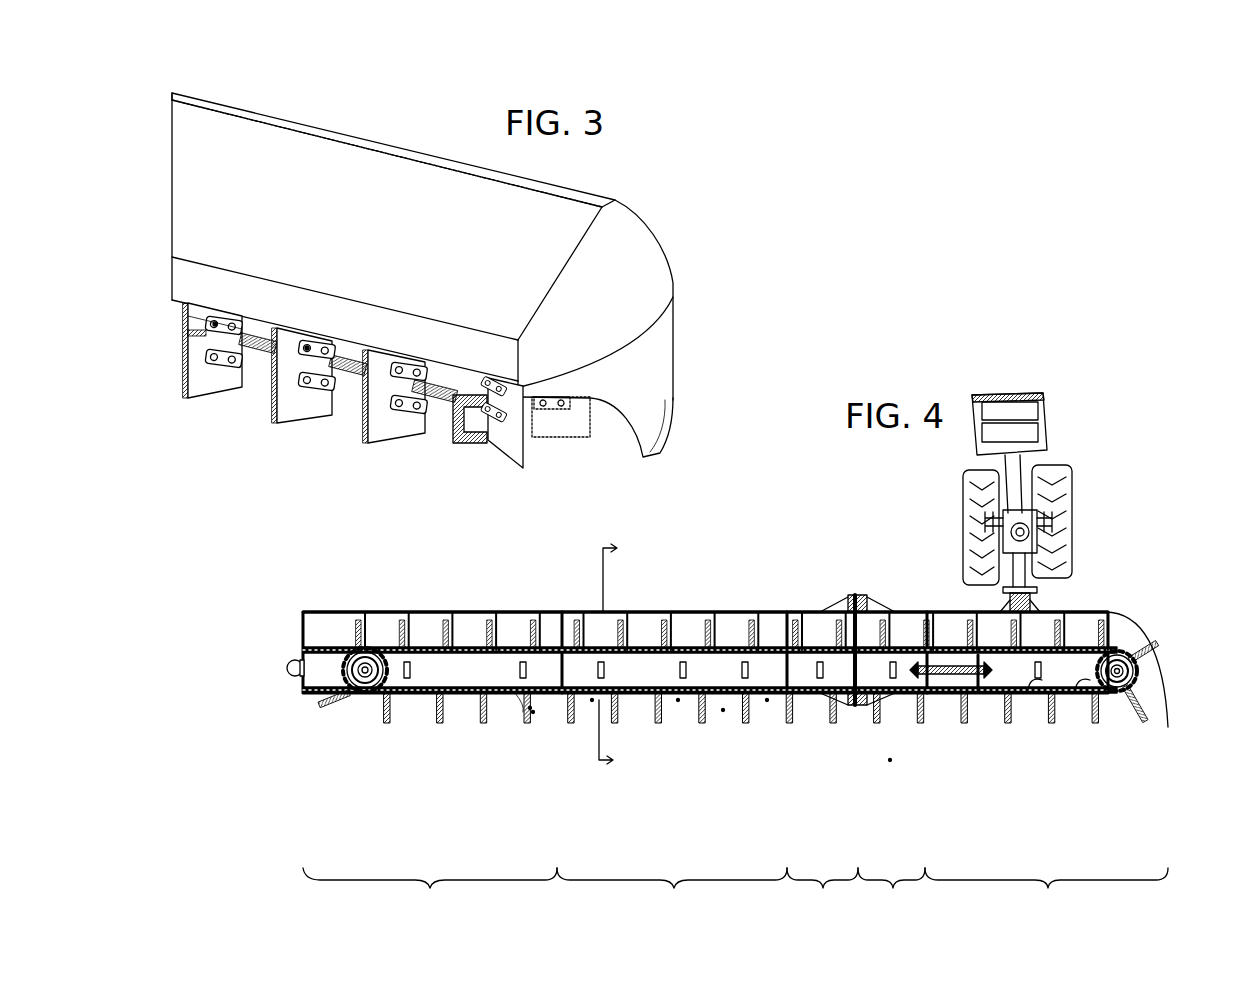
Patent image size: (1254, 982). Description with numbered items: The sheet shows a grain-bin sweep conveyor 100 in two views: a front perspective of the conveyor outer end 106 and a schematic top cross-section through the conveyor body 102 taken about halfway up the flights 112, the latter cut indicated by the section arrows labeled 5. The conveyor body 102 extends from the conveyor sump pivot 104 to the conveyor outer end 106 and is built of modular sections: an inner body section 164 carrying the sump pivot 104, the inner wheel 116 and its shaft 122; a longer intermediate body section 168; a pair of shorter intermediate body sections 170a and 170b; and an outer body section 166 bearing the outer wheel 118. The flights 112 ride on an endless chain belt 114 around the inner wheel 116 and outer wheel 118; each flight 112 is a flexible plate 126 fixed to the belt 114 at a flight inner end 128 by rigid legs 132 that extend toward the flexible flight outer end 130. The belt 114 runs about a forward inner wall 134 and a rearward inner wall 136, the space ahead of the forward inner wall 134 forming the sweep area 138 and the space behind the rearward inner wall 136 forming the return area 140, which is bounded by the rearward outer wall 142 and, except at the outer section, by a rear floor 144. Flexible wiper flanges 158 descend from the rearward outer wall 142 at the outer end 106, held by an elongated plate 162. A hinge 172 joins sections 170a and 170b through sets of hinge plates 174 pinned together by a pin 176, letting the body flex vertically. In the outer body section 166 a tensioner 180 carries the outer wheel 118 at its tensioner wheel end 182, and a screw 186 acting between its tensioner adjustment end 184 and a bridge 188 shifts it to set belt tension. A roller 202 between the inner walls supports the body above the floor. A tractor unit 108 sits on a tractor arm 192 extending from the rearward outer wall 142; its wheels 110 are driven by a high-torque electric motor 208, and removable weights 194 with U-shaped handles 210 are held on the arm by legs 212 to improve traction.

In FIG. 4, the sweep conveyor 100 is at (895, 769).
In FIG. 4, the conveyor body 102 is at (767, 700).
In FIG. 4, the conveyor sump pivot 104 is at (275, 690).
In FIG. 3, the conveyor outer end 106 is at (313, 128).
In FIG. 4, the conveyor outer end 106 is at (1170, 660).
In FIG. 4, the tractor unit 108 is at (958, 515).
In FIG. 4, the wheels 110 is at (1068, 475).
In FIG. 3, the flights 112 is at (402, 430).
In FIG. 4, the flights 112 is at (687, 700).
In FIG. 3, the endless belt 114 is at (260, 345).
In FIG. 4, the endless belt 114 is at (592, 700).
In FIG. 4, the inner wheel 116 is at (357, 698).
In FIG. 3, the outer wheel 118 is at (463, 443).
In FIG. 4, the outer wheel 118 is at (1160, 705).
In FIG. 4, the shaft 122 is at (367, 698).
In FIG. 3, the plate 126 is at (380, 397).
In FIG. 4, the plate 126 is at (523, 710).
In FIG. 3, the flight inner end 128 is at (437, 423).
In FIG. 3, the flight outer end 130 is at (367, 433).
In FIG. 4, the flight outer end 130 is at (530, 710).
In FIG. 3, the rigid legs 132 is at (392, 375).
In FIG. 4, the rigid legs 132 is at (532, 710).
In FIG. 3, the forward inner wall 134 is at (267, 377).
In FIG. 4, the forward inner wall 134 is at (678, 700).
In FIG. 4, the rearward inner wall 136 is at (690, 650).
In FIG. 3, the sweep area 138 is at (230, 393).
In FIG. 4, the sweep area 138 is at (723, 710).
In FIG. 4, the return area 140 is at (655, 625).
In FIG. 4, the rearward outer wall 142 is at (738, 625).
In FIG. 4, the rear floor 144 is at (775, 625).
In FIG. 3, the flanges 158 is at (663, 453).
In FIG. 3, the elongated plate 162 is at (673, 365).
In FIG. 4, the inner body section 164 is at (430, 892).
In FIG. 3, the outer body section 166 is at (352, 152).
In FIG. 4, the outer body section 166 is at (1046, 892).
In FIG. 4, the longer intermediate body section 168 is at (672, 892).
In FIG. 4, the shorter intermediate body section 170a is at (822, 892).
In FIG. 4, the shorter intermediate body section 170b is at (891, 892).
In FIG. 4, the hinge 172 is at (852, 598).
In FIG. 4, the hinge plates 174 is at (862, 600).
In FIG. 4, the pin 176 is at (860, 598).
In FIG. 4, the tensioner 180 is at (1040, 705).
In FIG. 4, the tensioner wheel end 182 is at (1085, 705).
In FIG. 4, the tensioner adjustment end 184 is at (1000, 702).
In FIG. 4, the screw 186 is at (950, 700).
In FIG. 4, the bridge 188 is at (935, 693).
In FIG. 4, the tractor arm 192 is at (1030, 578).
In FIG. 4, the weights 194 is at (1010, 405).
In FIG. 4, the roller 202 is at (413, 660).
In FIG. 4, the high-torque electric motor 208 is at (1052, 498).
In FIG. 4, the U-shaped handles 210 is at (1043, 396).
In FIG. 4, the legs 212 is at (1047, 412).
In FIG. 4, the section view indicator 5 is at (616, 655).